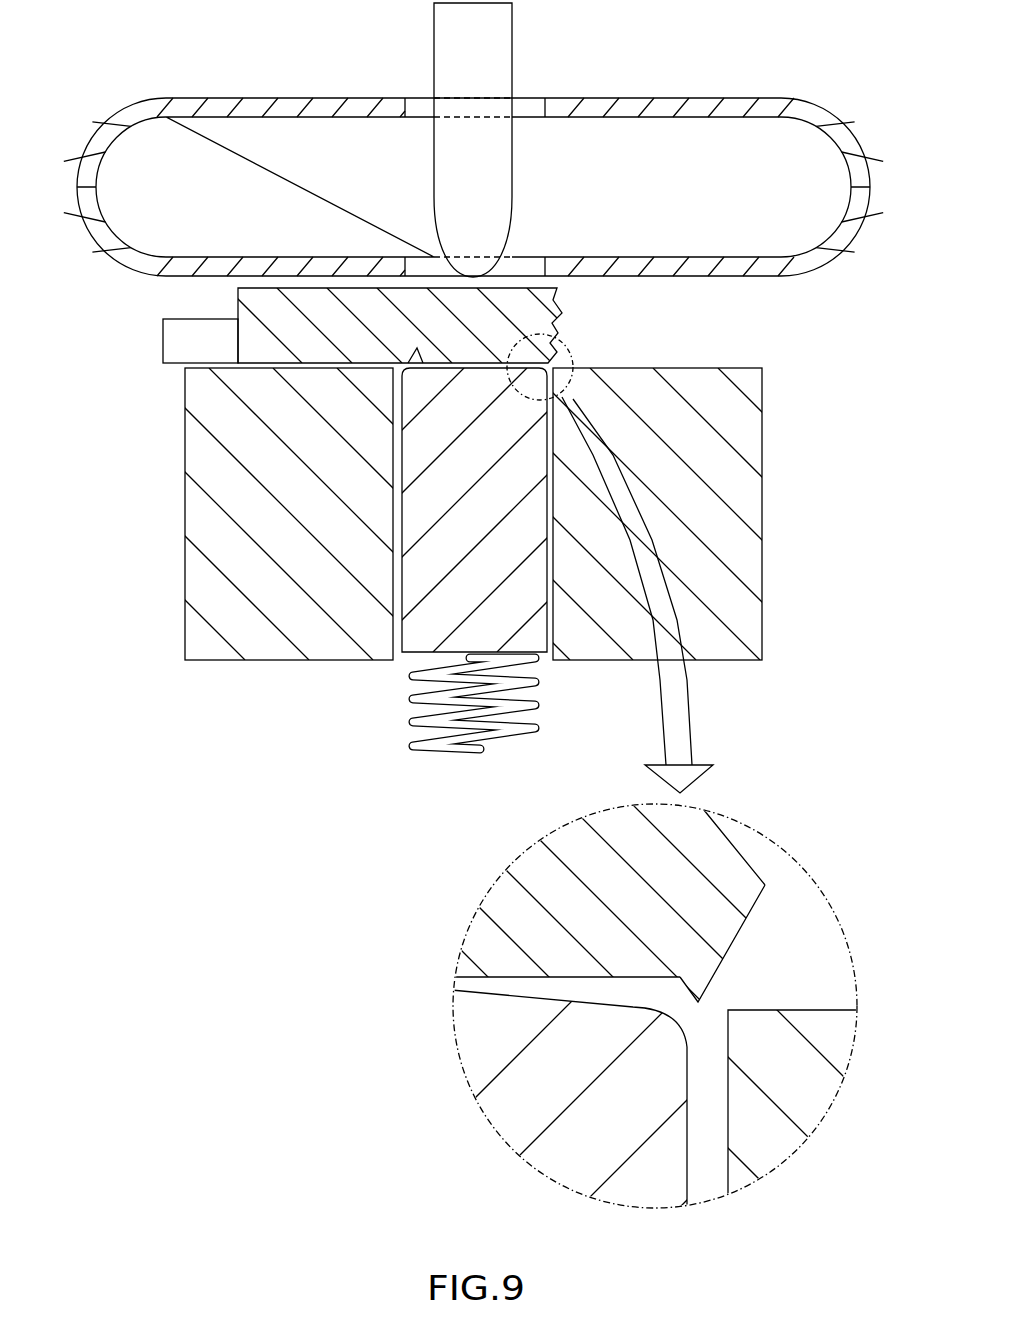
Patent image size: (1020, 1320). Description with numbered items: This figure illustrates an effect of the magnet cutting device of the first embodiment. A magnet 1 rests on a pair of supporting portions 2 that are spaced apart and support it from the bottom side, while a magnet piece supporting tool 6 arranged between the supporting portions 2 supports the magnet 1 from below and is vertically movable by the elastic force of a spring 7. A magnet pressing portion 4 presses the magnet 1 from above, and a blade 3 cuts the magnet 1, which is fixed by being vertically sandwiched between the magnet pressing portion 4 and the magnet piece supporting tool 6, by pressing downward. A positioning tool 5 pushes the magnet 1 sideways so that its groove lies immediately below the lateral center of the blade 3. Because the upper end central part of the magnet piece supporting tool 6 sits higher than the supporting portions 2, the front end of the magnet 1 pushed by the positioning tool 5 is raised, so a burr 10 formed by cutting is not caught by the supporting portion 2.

The magnet 1 is at (527, 312).
The supporting portions 2 is at (203, 522).
The blade 3 is at (443, 54).
The magnet pressing portion 4 is at (697, 98).
The positioning tool 5 is at (172, 341).
The magnet piece supporting tool 6 is at (423, 635).
The spring 7 is at (437, 750).
The burr 10 is at (703, 992).